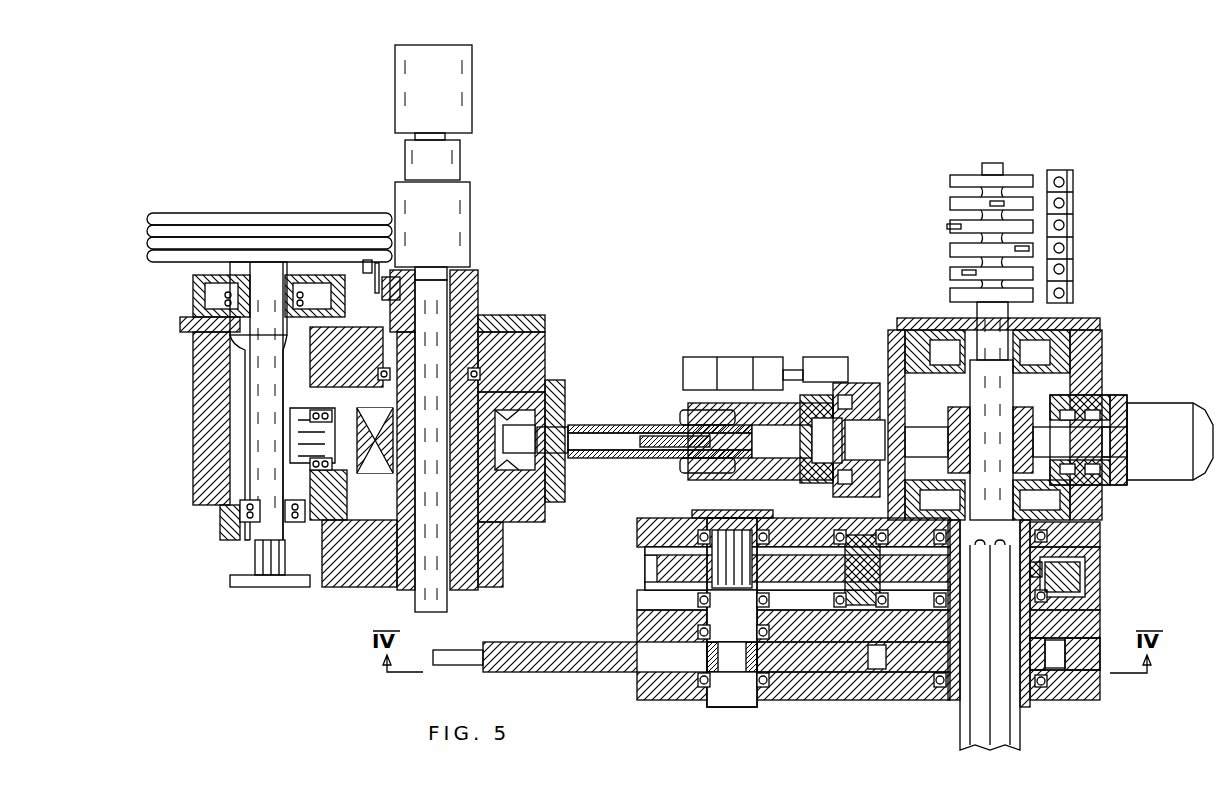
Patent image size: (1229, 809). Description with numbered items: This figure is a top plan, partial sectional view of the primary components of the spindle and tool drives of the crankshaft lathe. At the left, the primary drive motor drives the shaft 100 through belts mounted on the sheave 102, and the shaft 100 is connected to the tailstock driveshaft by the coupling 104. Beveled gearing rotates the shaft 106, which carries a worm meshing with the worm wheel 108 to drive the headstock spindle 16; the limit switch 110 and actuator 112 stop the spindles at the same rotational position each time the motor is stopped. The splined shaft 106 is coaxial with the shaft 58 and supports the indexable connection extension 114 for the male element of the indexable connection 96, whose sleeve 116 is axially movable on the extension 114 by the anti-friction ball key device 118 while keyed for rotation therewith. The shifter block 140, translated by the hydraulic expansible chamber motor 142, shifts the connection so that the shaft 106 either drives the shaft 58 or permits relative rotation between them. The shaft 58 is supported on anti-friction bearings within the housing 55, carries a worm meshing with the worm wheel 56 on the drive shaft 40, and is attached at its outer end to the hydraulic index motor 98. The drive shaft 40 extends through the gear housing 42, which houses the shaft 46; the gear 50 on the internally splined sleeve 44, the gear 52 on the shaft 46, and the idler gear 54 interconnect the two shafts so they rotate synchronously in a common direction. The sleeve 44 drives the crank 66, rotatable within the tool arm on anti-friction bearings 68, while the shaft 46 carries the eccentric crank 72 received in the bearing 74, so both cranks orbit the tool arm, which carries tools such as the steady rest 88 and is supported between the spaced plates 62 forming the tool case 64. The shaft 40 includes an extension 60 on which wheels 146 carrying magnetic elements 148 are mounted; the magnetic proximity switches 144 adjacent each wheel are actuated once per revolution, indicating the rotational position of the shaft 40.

The spindle 16 is at (395, 585).
The splined drive shaft 40 is at (989, 635).
The gear housing 42 is at (1100, 540).
The internally splined sleeve 44 is at (952, 700).
The shaft 46 is at (705, 520).
The gear 50 is at (1062, 575).
The gear 52 is at (650, 568).
The idler gear 54 is at (862, 570).
The housing 55 is at (1105, 332).
The worm wheel 56 is at (978, 457).
The shaft 58 is at (1115, 437).
The shaft extension 60 is at (990, 314).
The plates 62 is at (1100, 620).
The tool case 64 is at (830, 735).
The crank 66 is at (915, 670).
The anti-friction bearings 68 is at (876, 665).
The eccentric crank 72 is at (728, 665).
The bearing 74 is at (700, 660).
The steady rest 88 is at (462, 660).
The indexable connection 96 is at (796, 488).
The hydraulic index motor 98 is at (1157, 441).
The shaft 100 is at (257, 362).
The sheave 102 is at (220, 224).
The coupling 104 is at (290, 587).
The shaft 106 is at (348, 432).
The worm wheel 108 is at (378, 465).
The limit switch 110 is at (402, 275).
The actuator 112 is at (365, 262).
The indexable connection extension 114 is at (648, 425).
The sleeve 116 is at (778, 405).
The anti-friction ball key device 118 is at (685, 466).
The shifter block 140 is at (830, 360).
The hydraulic expansible chamber motor 142 is at (726, 370).
The magnetic proximity switches 144 is at (1070, 248).
The wheel 146 is at (950, 202).
The magnetic element 148 is at (946, 226).